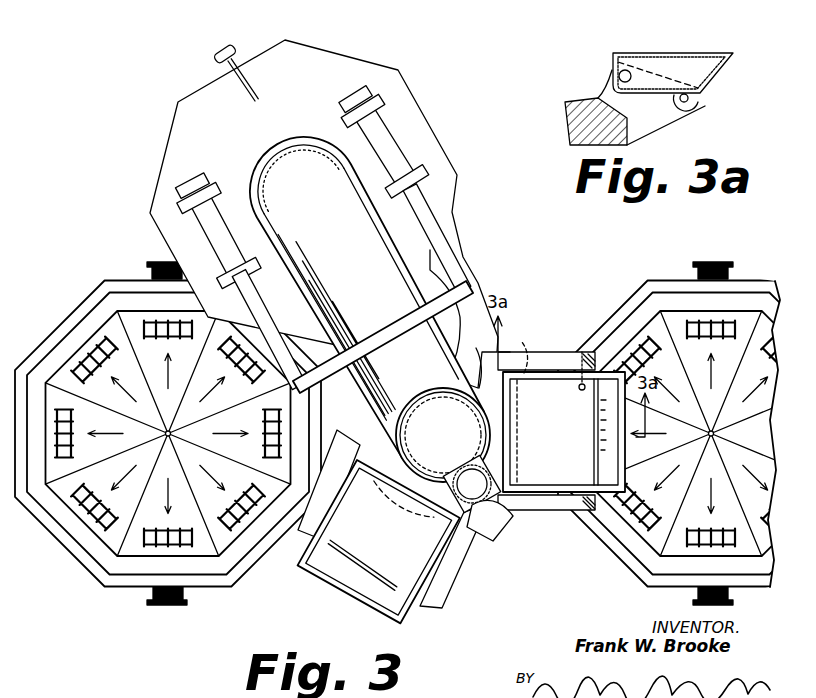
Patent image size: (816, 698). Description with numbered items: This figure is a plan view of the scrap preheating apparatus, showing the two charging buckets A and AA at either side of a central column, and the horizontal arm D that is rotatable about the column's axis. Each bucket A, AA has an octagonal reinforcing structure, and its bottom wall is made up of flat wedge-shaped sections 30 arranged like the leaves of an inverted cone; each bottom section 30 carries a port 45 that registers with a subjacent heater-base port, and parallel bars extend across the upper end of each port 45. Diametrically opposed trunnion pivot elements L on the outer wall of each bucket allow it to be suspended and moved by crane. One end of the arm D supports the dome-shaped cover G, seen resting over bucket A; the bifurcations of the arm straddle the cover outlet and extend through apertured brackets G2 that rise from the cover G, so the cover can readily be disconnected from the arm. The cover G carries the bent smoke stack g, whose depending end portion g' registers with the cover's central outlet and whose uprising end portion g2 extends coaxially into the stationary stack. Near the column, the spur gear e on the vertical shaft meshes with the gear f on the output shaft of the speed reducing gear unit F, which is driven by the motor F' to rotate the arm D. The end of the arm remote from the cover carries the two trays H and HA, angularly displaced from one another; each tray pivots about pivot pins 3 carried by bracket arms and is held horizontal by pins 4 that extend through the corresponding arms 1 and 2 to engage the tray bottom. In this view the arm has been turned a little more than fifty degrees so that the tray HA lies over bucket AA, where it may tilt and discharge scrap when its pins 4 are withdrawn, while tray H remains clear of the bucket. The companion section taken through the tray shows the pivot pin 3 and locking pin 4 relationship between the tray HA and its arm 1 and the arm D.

In FIG. 3, the charging bucket A is at (77, 562).
In FIG. 3, the charging bucket AA is at (618, 548).
In FIG. 3, the bottom wall sections 30 is at (212, 456).
In FIG. 3, the port 45 is at (177, 533).
In FIG. 3, the trunnion pivot elements L is at (154, 263).
In FIG. 3, the cover G is at (294, 116).
In FIG. 3, the apertured brackets G2 is at (419, 142).
In FIG. 3, the bent smoke stack g is at (360, 289).
In FIG. 3, the depending end portion g' is at (286, 171).
In FIG. 3, the uprising end portion g2 is at (474, 415).
In FIG. 3, the spur gear e is at (440, 401).
In FIG. 3, the gear f is at (492, 486).
In FIG. 3, the speed reducing gear unit F is at (469, 483).
In FIG. 3, the motor F' is at (491, 527).
In FIG. 3, the tray H is at (397, 532).
In FIG. 3, the arm 2 is at (454, 569).
In FIG. 3, the tray HA is at (576, 420).
In FIG. 3A, the tray HA is at (718, 70).
In FIG. 3, the horizontal arm D is at (491, 336).
In FIG. 3A, the horizontal arm D is at (572, 122).
In FIG. 3, the pivot pins 3 is at (517, 402).
In FIG. 3A, the pivot pins 3 is at (630, 70).
In FIG. 3, the arm 1 is at (560, 352).
In FIG. 3A, the arm 1 is at (668, 128).
In FIG. 3, the pins 4 is at (581, 352).
In FIG. 3A, the pins 4 is at (698, 104).